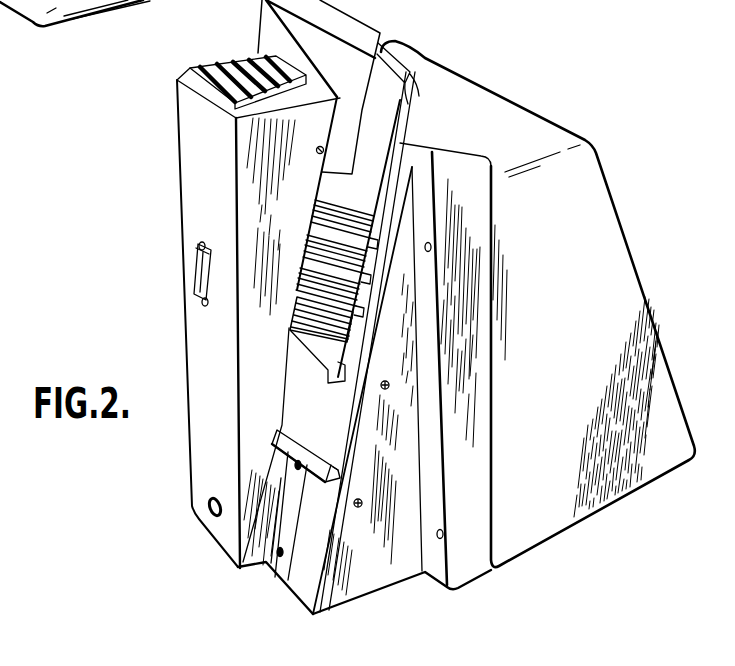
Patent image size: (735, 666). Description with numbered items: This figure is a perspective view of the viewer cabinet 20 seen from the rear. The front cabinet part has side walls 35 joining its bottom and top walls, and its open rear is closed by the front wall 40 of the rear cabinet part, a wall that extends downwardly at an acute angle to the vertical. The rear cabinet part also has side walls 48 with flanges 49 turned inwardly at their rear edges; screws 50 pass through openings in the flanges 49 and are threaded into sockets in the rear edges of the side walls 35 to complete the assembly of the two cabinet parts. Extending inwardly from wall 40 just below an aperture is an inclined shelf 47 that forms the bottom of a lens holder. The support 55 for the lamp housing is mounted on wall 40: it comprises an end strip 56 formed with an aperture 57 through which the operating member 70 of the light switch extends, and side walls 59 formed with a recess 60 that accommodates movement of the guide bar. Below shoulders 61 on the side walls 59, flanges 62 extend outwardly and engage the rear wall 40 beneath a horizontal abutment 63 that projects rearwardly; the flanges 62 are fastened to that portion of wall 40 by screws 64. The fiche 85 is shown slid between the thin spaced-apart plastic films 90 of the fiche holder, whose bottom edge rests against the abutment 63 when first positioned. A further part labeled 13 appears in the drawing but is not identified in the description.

The electrical connector 13 is at (342, 340).
The cabinet 20 is at (112, 22).
The side walls 35 is at (185, 0).
The front wall of rear cabinet part 40 is at (341, 423).
The inclined shelf 47 is at (437, 64).
The side walls 48 is at (491, 404).
The flanges 49 is at (418, 330).
The screws 50 is at (431, 246).
The support for the lamp housing 55 is at (171, 277).
The end strip 56 is at (217, 347).
The aperture 57 is at (200, 294).
The side walls 59 is at (270, 361).
The recess 60 is at (314, 324).
The shoulders 61 is at (277, 462).
The flanges 62 is at (293, 544).
The horizontal abutment 63 is at (333, 466).
The screws 64 is at (277, 553).
The operating member 70 is at (198, 245).
The fiche 85 is at (354, 26).
The films 90 is at (250, 28).